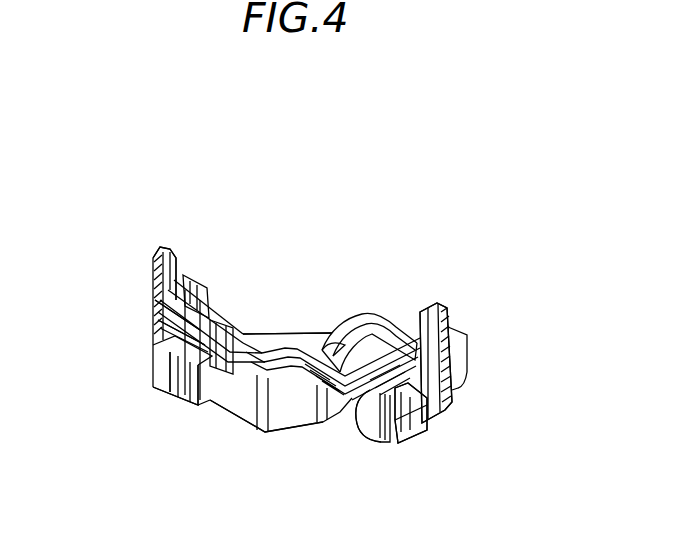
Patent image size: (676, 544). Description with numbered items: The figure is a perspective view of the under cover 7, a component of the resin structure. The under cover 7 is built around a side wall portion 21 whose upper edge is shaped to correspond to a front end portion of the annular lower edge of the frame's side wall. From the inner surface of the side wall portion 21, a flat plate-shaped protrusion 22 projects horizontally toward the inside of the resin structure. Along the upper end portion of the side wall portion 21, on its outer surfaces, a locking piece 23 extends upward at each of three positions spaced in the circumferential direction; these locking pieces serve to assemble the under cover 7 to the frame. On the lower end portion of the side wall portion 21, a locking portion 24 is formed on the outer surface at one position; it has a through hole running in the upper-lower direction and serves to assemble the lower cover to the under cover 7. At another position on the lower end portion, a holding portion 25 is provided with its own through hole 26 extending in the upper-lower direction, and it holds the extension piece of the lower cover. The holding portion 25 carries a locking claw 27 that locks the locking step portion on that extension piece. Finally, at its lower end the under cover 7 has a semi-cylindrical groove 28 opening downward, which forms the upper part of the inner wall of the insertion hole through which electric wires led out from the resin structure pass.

The under cover 7 is at (326, 212).
The side wall portion 21 is at (245, 408).
The flat plate-shaped protrusion 22 is at (283, 338).
The locking piece 23 is at (157, 263).
The locking portion 24 is at (412, 422).
The holding portion 25 is at (172, 385).
The through hole 26 is at (175, 342).
The locking claw 27 is at (170, 372).
The semi-cylindrical groove 28 is at (362, 405).